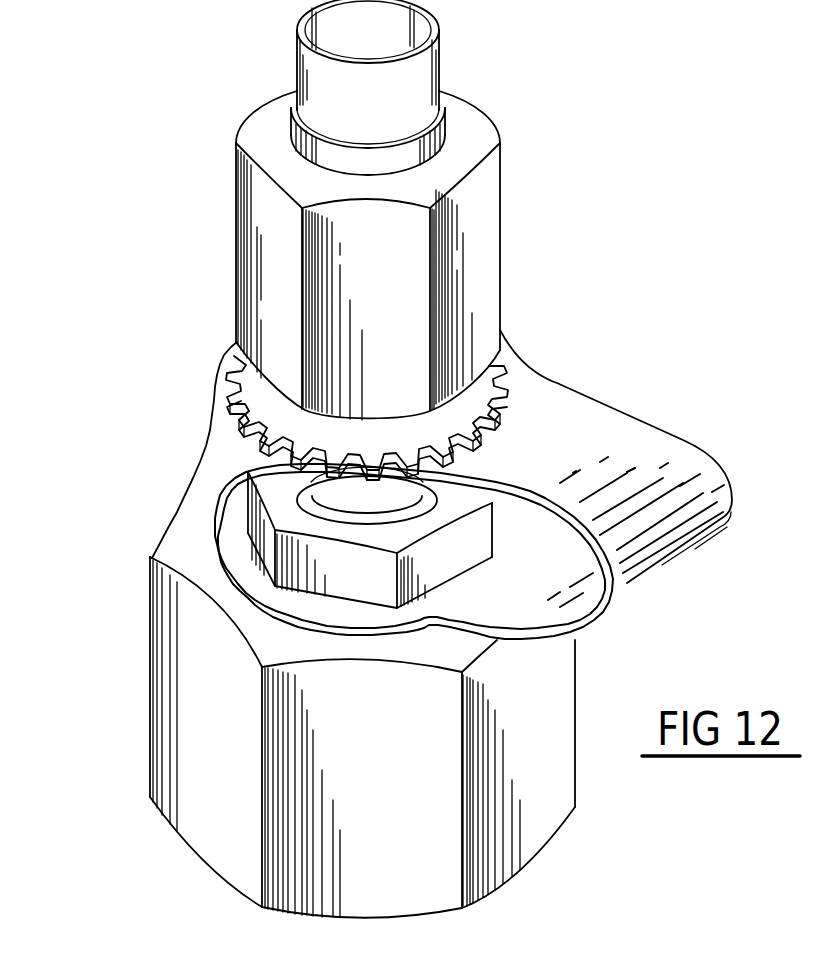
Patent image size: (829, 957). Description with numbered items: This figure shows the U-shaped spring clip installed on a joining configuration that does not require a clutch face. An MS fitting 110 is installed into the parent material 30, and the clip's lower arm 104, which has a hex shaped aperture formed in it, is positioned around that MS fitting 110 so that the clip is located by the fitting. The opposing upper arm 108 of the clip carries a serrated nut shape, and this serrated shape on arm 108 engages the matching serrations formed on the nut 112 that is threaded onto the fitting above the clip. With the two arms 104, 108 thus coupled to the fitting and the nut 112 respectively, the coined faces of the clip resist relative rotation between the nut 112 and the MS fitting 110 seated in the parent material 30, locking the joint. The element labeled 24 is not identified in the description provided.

The hex head bolt with tubular extension 24 is at (503, 210).
The nut 112 is at (522, 362).
The arm 108 is at (603, 427).
The MS fitting 110 is at (247, 492).
The arm 104 is at (230, 540).
The parent material 30 is at (148, 641).